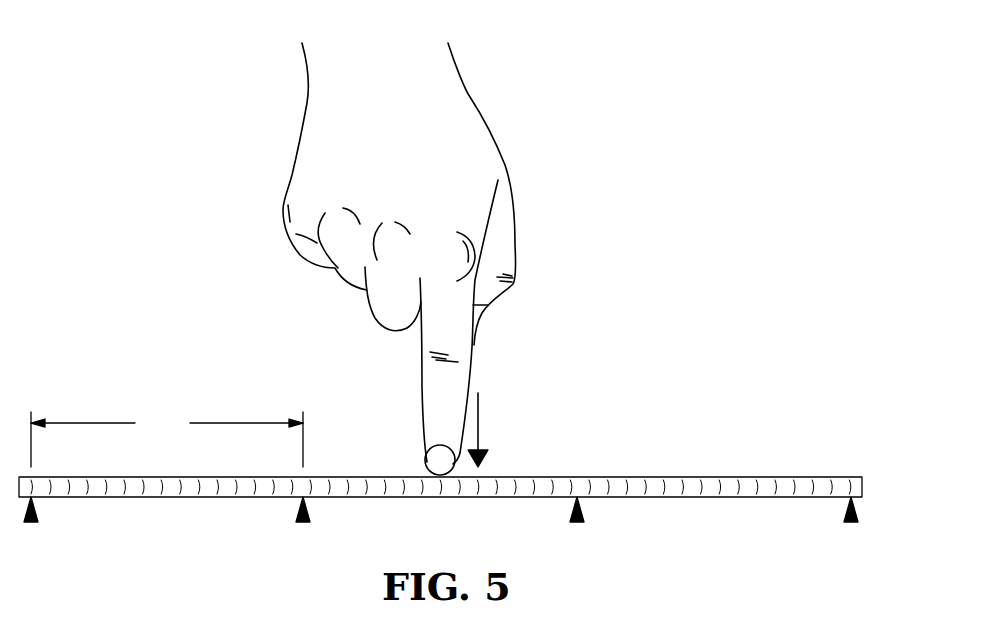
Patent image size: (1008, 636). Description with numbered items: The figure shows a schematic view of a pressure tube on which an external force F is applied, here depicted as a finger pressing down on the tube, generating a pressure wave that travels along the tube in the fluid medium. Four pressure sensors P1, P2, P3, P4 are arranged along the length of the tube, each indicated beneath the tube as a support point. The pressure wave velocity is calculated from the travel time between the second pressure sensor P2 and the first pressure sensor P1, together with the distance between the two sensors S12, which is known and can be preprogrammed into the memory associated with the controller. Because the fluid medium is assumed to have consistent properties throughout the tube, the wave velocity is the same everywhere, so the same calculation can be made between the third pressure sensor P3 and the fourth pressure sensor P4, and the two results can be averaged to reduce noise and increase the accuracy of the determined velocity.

The first pressure sensor P1 is at (33, 528).
The second pressure sensor P2 is at (307, 528).
The third pressure sensor P3 is at (580, 528).
The fourth pressure sensor P4 is at (854, 528).
The distance between the two sensors S12 is at (167, 439).
The external force F is at (480, 430).